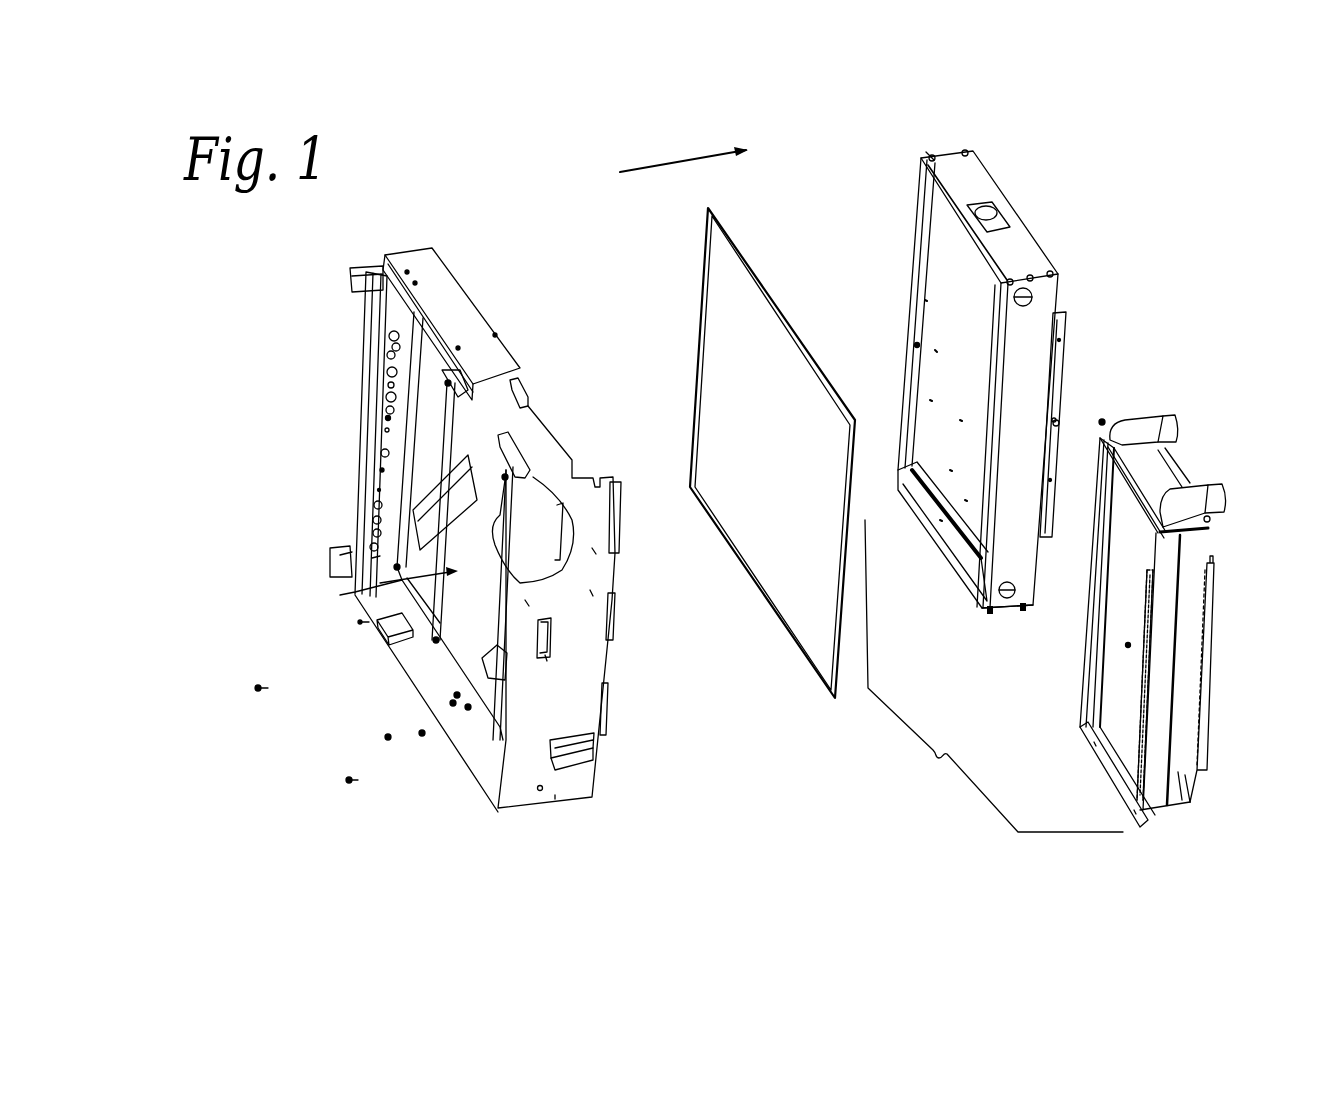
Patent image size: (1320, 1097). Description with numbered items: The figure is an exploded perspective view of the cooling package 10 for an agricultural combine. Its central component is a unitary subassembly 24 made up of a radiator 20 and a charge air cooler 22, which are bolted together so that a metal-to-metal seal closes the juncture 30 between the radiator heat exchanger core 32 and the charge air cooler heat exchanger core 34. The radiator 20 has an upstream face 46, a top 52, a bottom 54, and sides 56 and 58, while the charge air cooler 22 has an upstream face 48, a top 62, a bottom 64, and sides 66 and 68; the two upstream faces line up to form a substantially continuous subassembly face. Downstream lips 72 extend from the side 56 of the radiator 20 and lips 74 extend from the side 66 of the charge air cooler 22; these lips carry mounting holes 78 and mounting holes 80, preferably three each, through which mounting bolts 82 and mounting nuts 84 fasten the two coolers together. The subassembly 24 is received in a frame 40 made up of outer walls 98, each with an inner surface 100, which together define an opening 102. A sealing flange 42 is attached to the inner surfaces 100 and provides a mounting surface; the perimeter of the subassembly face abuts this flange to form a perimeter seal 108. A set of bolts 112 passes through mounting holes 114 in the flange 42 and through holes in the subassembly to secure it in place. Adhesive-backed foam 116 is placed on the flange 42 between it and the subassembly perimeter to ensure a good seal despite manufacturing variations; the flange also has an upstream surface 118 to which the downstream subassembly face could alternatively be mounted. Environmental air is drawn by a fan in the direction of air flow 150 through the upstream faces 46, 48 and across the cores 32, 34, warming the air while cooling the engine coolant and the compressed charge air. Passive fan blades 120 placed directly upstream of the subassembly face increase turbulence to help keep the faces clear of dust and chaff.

The cooling package 10 is at (700, 122).
The direction of air flow 150 is at (662, 171).
The radiator 20 is at (989, 380).
The charge air cooler 22 is at (1139, 587).
The subassembly 24 is at (994, 676).
The juncture 30 is at (1102, 329).
The heat exchanger core 32 is at (936, 274).
The heat exchanger core 34 is at (1104, 733).
The frame 40 is at (448, 519).
The sealing flange 42 is at (467, 677).
The upstream face 46 is at (932, 328).
The upstream face 48 is at (1108, 690).
The top 52 is at (1020, 255).
The bottom 54 is at (978, 600).
The side 56 is at (1033, 307).
The side 58 is at (930, 155).
The top 62 is at (1147, 473).
The bottom 64 is at (1165, 815).
The side 66 is at (1108, 432).
The side 68 is at (1187, 653).
The downstream lips 72 is at (1058, 366).
The lips 74 is at (1087, 660).
The mounting holes 78 is at (1060, 423).
The mounting holes 80 is at (1083, 602).
The mounting bolts 82 is at (1130, 725).
The mounting nuts 84 is at (914, 345).
The outer walls 98 is at (450, 297).
The inner surface 100 is at (400, 430).
The opening 102 is at (340, 595).
The perimeter seal 108 is at (770, 660).
The bolts 112 is at (256, 692).
The mounting holes 114 is at (450, 663).
The foam 116 is at (698, 355).
The upstream surface 118 is at (440, 657).
The passive fan blades 120 is at (423, 512).